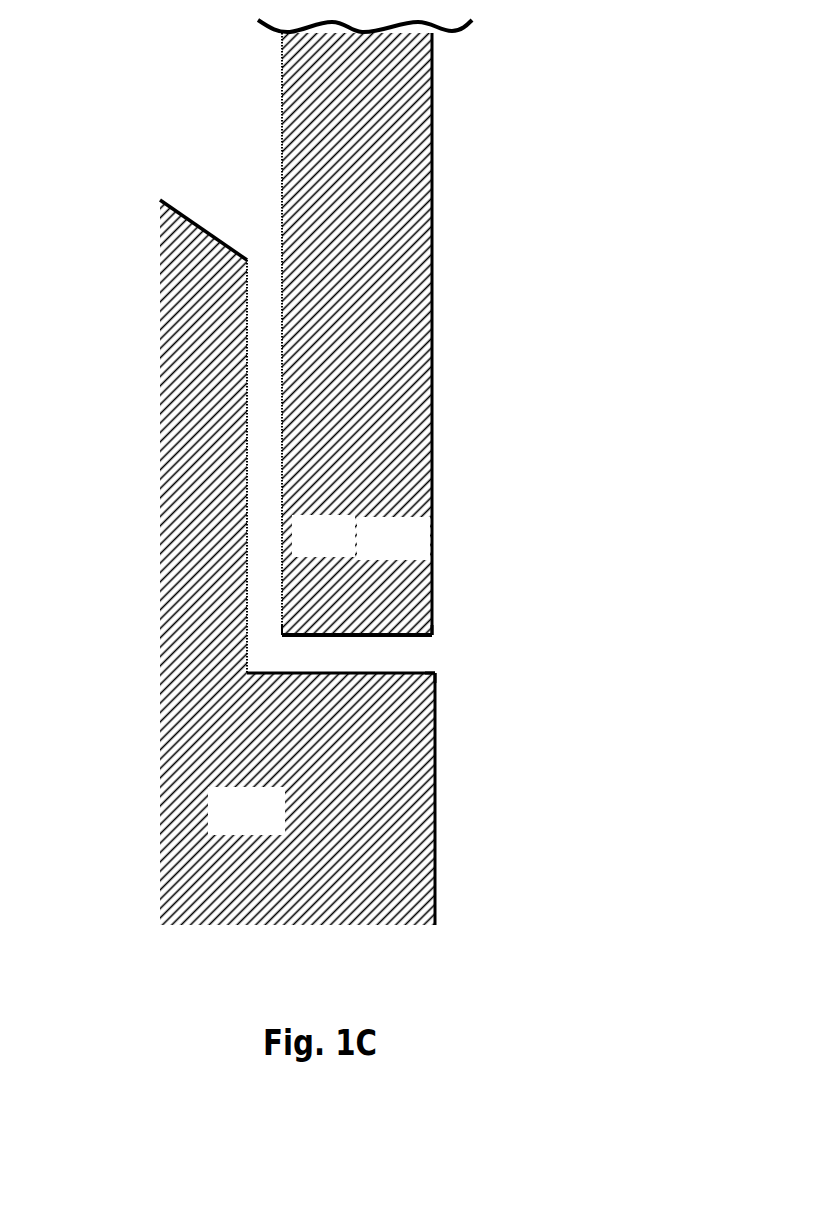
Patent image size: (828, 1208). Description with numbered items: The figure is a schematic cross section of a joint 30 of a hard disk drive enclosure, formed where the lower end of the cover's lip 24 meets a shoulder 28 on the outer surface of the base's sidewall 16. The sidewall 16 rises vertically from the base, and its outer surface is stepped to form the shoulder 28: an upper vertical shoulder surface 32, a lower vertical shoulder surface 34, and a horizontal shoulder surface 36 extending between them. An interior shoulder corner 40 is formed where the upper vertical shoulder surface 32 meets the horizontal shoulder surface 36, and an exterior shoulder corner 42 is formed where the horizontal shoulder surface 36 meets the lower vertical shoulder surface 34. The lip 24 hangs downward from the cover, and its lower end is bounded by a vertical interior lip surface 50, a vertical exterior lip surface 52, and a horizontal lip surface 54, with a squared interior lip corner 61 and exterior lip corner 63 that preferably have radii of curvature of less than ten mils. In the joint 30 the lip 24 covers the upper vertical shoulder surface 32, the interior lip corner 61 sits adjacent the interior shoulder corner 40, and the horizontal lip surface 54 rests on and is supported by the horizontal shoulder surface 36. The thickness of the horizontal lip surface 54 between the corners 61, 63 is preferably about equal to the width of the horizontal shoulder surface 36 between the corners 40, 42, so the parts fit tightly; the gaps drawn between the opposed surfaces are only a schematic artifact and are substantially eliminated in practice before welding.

The sidewall 16 is at (221, 827).
The lip 24 is at (484, 357).
The shoulder 28 is at (466, 624).
The joint 30 is at (654, 377).
The upper vertical shoulder surface 32 is at (252, 333).
The lower vertical shoulder surface 34 is at (438, 831).
The horizontal shoulder surface 36 is at (341, 667).
The interior shoulder corner 40 is at (246, 672).
The exterior shoulder corner 42 is at (422, 686).
The vertical interior lip surface 50 is at (281, 467).
The vertical exterior lip surface 52 is at (436, 309).
The horizontal lip surface 54 is at (329, 631).
The interior lip corner 61 is at (293, 629).
The exterior lip corner 63 is at (421, 629).